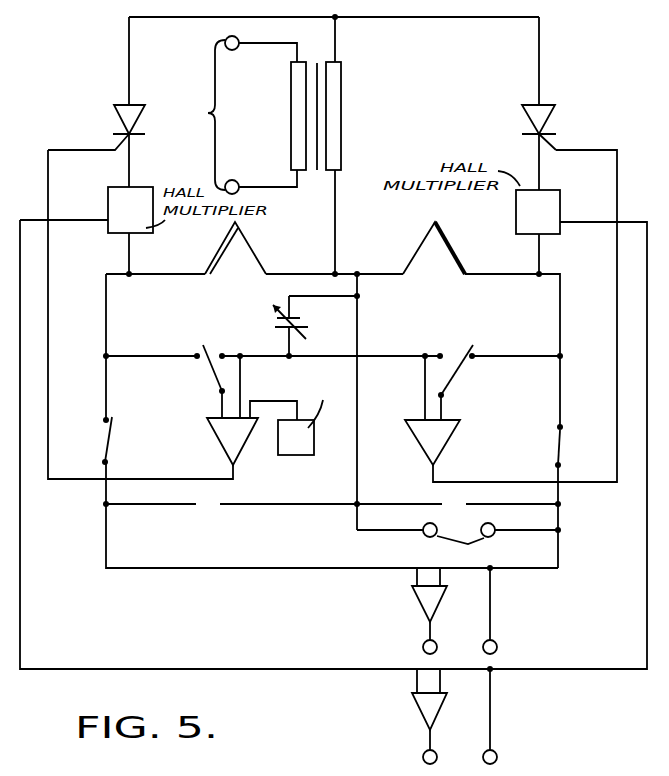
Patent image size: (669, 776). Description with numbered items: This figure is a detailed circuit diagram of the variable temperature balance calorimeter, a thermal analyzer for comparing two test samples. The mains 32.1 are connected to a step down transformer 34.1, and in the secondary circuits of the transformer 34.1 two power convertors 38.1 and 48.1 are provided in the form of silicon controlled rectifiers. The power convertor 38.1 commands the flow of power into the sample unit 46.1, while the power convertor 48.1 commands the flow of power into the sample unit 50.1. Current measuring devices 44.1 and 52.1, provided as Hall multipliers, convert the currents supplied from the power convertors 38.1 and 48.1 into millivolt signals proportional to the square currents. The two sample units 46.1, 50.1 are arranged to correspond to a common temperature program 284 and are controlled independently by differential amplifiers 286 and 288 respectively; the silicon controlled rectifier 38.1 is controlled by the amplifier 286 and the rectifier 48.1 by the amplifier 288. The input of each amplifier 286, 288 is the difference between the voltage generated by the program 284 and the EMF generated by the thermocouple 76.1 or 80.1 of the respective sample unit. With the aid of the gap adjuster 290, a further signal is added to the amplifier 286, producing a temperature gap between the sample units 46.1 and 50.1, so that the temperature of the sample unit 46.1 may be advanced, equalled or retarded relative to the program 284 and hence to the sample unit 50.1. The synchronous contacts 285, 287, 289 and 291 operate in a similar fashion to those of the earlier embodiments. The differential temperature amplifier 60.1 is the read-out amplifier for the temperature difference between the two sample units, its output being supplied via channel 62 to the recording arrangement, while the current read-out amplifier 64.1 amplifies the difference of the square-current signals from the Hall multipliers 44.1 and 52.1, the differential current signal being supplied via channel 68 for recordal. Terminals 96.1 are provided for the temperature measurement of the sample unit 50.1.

The mains 32.1 is at (201, 115).
The step down transformer 34.1 is at (316, 97).
The power convertor 38.1 is at (96, 126).
The power convertor 48.1 is at (559, 127).
The current measuring device 44.1 is at (130, 210).
The current measuring device 52.1 is at (538, 212).
The sample unit 46.1 is at (235, 262).
The sample unit 50.1 is at (434, 267).
The thermocouple 76.1 is at (255, 250).
The thermocouple 80.1 is at (461, 242).
The temperature program 284 is at (278, 325).
The synchronous contact 285 is at (191, 368).
The differential amplifier 286 is at (212, 432).
The synchronous contact 287 is at (474, 370).
The differential amplifier 288 is at (445, 447).
The synchronous contact 289 is at (86, 439).
The gap adjuster 290 is at (297, 455).
The synchronous contact 291 is at (576, 447).
The terminals 96.1 is at (470, 545).
The differential temperature amplifier 60.1 is at (401, 604).
The channel 62 is at (460, 648).
The current read-out amplifier 64.1 is at (403, 710).
The channel 68 is at (460, 756).